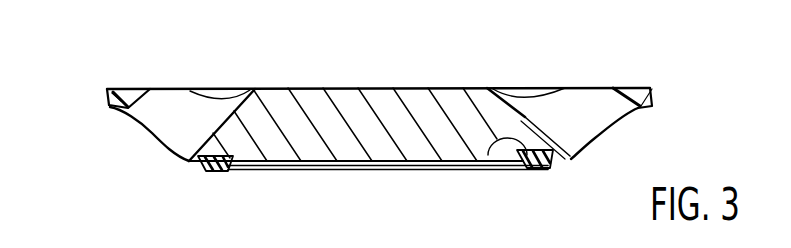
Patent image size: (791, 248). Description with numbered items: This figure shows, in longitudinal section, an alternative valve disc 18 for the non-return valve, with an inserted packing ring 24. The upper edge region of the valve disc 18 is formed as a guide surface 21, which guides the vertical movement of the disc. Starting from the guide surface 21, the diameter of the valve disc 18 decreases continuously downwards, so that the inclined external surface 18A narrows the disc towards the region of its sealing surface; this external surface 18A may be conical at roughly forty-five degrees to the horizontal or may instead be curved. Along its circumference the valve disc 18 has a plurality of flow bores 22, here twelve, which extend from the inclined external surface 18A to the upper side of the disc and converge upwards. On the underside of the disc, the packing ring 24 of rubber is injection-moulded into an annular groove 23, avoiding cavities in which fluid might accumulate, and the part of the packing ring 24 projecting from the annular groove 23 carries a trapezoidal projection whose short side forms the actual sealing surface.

The valve disc 18 is at (401, 114).
The external surface 18A is at (150, 137).
The guide surface 21 is at (104, 100).
The flow bores 22 is at (578, 103).
The annular groove 23 is at (483, 170).
The packing ring 24 is at (533, 170).